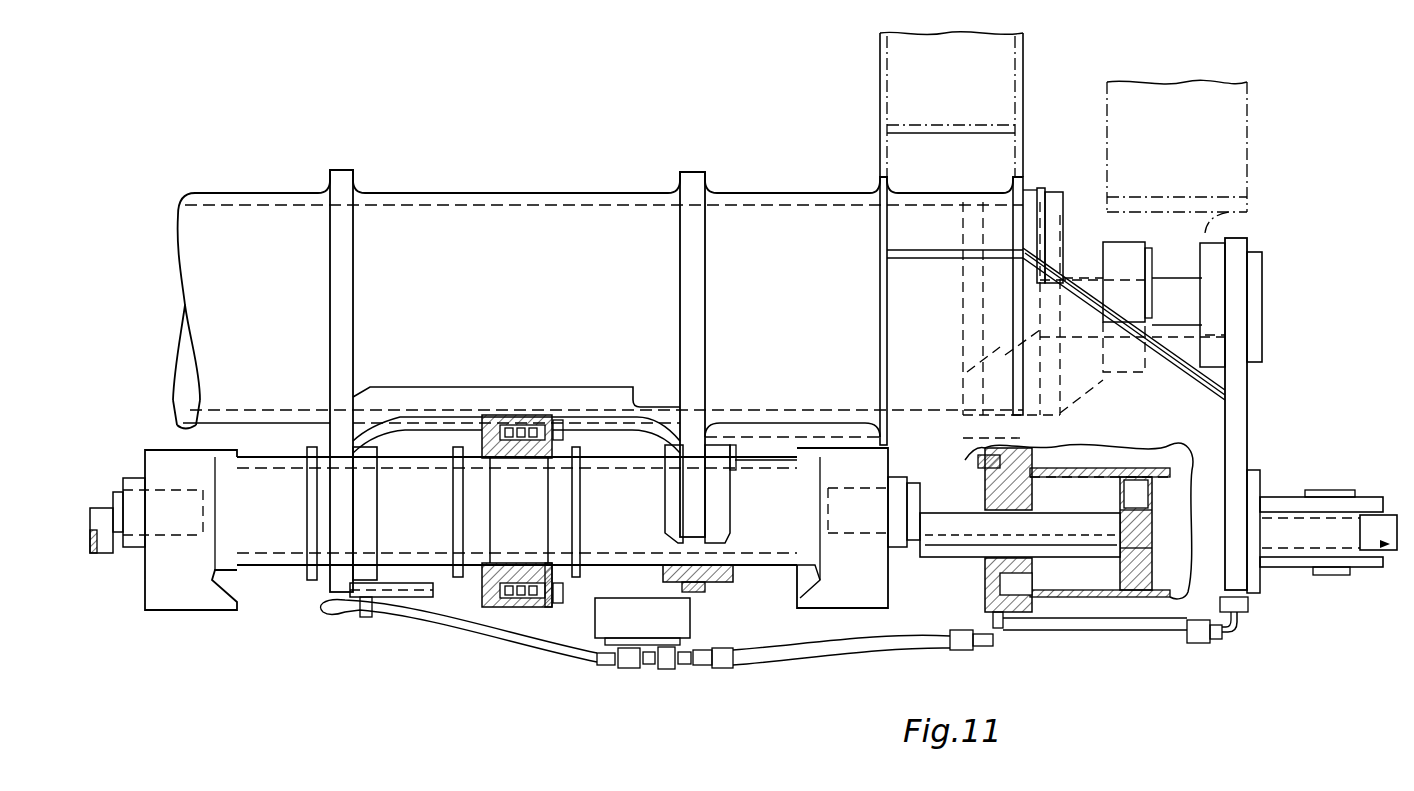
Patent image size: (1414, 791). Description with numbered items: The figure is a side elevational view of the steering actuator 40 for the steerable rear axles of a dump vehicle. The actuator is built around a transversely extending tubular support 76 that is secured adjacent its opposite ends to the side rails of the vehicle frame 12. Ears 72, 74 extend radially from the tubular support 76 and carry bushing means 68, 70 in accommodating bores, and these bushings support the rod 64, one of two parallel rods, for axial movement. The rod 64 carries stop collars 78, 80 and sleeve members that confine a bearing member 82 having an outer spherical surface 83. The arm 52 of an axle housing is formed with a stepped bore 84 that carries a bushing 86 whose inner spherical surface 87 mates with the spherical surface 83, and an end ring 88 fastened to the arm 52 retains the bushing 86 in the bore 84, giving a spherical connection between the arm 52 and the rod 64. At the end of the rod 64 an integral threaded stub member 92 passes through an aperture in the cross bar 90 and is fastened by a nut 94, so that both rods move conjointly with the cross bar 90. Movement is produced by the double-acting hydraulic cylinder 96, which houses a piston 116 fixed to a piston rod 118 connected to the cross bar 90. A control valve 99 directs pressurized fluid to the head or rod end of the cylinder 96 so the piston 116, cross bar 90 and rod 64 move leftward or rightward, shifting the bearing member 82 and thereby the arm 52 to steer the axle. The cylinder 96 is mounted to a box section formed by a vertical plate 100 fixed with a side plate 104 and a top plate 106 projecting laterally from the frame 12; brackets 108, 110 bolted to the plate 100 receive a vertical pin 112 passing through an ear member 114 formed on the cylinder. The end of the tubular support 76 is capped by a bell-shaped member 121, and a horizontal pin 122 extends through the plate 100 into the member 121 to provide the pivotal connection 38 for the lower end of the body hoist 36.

The vehicle frame 12 is at (872, 78).
The multistage double-acting inverted hydraulic hoist 36 is at (1250, 167).
The pivotal connection 38 is at (1263, 305).
The steering actuator 40 is at (1247, 648).
The arm 52 is at (495, 420).
The rod 64 is at (766, 545).
The bushing means 68 is at (722, 468).
The bushing means 70 is at (367, 525).
The ear 72 is at (697, 507).
The ear 74 is at (352, 494).
The tubular support 76 is at (765, 213).
The stop collar 78 is at (472, 445).
The stop collar 80 is at (566, 455).
The bearing member 82 is at (522, 460).
The outer spherical surface 83 is at (525, 563).
The stepped bore 84 is at (500, 585).
The bushing 86 is at (552, 567).
The inner spherical surface 87 is at (515, 425).
The end ring 88 is at (548, 420).
The cross bar 90 is at (163, 455).
The threaded stub member 92 is at (112, 500).
The nut 94 is at (135, 542).
The hydraulic cylinder 96 is at (1134, 475).
The control valve 99 is at (645, 625).
The vertical plate 100 is at (1242, 408).
The side plate 104 is at (1203, 428).
The top plate 106 is at (1082, 285).
The bracket 108 is at (1368, 497).
The bracket 110 is at (1365, 568).
The vertical pin 112 is at (1322, 576).
The ear member 114 is at (1392, 552).
The piston 116 is at (1135, 575).
The piston rod 118 is at (1080, 548).
The bell-shaped member 121 is at (1068, 215).
The horizontal pin 122 is at (1120, 252).